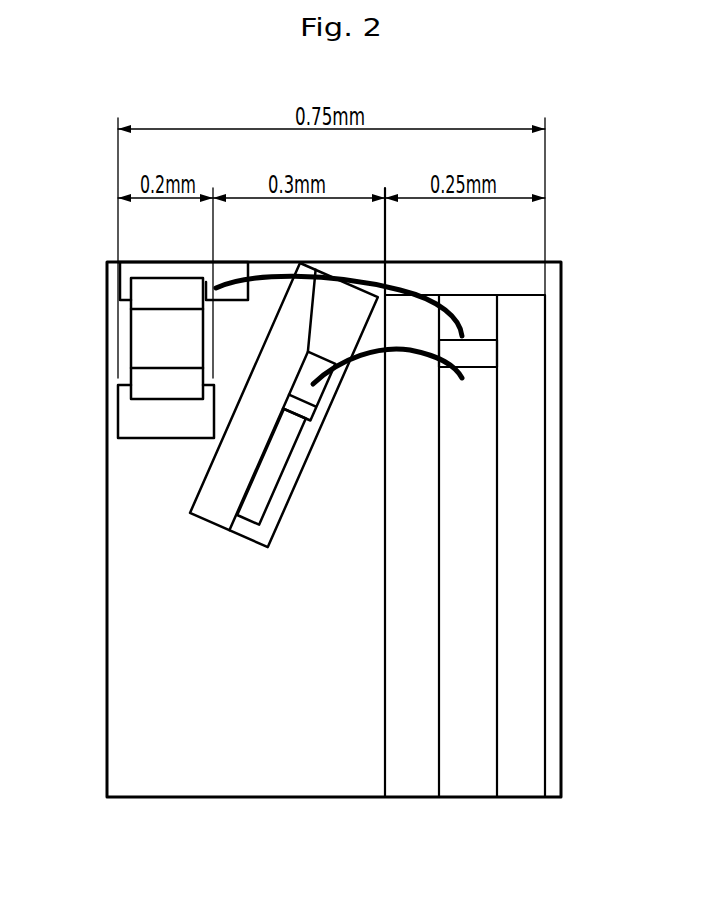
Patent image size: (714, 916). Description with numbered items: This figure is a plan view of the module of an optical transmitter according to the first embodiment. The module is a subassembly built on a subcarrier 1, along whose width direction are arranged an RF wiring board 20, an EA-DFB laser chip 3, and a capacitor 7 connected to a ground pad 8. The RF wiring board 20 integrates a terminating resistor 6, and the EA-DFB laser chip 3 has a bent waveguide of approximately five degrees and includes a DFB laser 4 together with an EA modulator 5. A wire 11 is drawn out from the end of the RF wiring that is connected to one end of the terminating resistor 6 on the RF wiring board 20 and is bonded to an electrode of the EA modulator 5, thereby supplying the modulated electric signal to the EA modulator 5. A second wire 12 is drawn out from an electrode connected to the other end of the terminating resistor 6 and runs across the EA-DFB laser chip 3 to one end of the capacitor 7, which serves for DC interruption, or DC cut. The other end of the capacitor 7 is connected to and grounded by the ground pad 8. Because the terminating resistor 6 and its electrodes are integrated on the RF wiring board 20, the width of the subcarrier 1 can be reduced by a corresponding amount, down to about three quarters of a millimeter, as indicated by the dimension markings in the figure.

The subcarrier 1 is at (285, 771).
The RF wiring board 20 is at (410, 770).
The terminating resistor 6 is at (487, 356).
The capacitor 7 is at (142, 348).
The ground pad 8 is at (142, 423).
The EA-DFB laser chip 3 is at (205, 493).
The DFB laser 4 is at (256, 500).
The EA modulator 5 is at (321, 392).
The wire 11 is at (357, 360).
The wire 12 is at (420, 297).